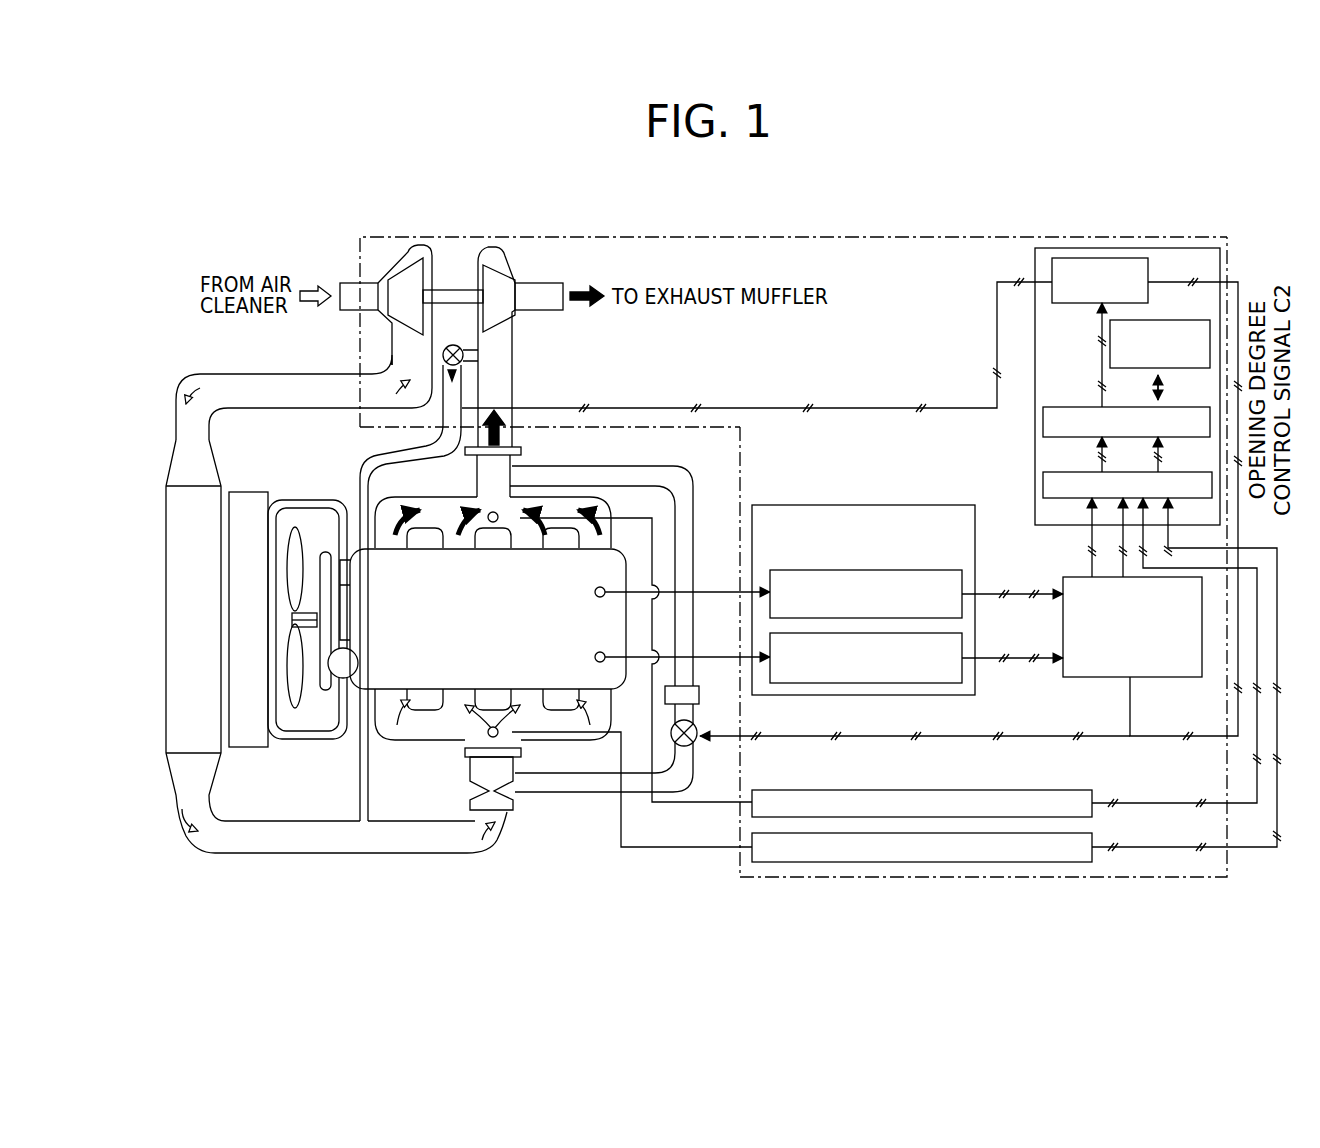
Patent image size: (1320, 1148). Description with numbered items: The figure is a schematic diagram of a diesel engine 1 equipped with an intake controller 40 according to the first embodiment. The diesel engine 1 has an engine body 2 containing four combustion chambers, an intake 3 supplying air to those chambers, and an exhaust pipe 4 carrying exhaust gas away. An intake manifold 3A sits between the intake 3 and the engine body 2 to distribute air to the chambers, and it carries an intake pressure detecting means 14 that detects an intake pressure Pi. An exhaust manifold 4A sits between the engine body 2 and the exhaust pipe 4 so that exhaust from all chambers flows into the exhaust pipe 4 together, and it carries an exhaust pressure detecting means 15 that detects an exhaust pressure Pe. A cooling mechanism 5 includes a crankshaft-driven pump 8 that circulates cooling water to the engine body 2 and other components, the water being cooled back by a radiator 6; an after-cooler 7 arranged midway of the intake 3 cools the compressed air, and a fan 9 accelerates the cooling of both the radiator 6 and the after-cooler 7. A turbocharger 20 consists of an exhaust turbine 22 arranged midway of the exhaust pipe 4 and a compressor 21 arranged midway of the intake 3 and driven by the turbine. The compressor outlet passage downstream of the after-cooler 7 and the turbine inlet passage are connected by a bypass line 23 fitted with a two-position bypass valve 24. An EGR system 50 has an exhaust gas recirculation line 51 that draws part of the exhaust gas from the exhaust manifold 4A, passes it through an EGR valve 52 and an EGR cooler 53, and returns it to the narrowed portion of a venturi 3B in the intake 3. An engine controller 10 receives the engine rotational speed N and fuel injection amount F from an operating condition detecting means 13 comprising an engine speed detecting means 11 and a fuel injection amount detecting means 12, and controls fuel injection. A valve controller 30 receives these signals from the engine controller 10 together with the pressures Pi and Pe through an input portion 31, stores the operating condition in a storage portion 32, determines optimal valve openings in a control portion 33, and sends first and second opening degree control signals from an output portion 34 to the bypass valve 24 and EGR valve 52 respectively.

The diesel engine 1 is at (975, 267).
The engine body 2 is at (618, 688).
The intake 3 is at (337, 821).
The intake manifold 3A is at (433, 742).
The venturi 3B is at (514, 803).
The exhaust pipe 4 is at (512, 437).
The exhaust manifold 4A is at (423, 502).
The cooling mechanism 5 is at (305, 460).
The radiator 6 is at (243, 747).
The after-cooler 7 is at (166, 617).
The pump 8 is at (358, 667).
The fan 9 is at (300, 550).
The engine controller 10 is at (1165, 677).
The engine speed detecting means 11 is at (962, 605).
The fuel injection amount detecting means 12 is at (975, 672).
The operating condition detecting means 13 is at (829, 604).
The intake pressure detecting means 14 is at (1092, 837).
The exhaust pressure detecting means 15 is at (1092, 790).
The turbocharger 20 is at (451, 267).
The compressor 21 is at (430, 246).
The exhaust turbine 22 is at (500, 249).
The bypass line 23 is at (447, 345).
The bypass valve 24 is at (460, 377).
The valve controller 30 is at (841, 370).
The input portion 31 is at (1043, 488).
The storage portion 32 is at (1110, 332).
The control portion 33 is at (1043, 424).
The output portion 34 is at (1107, 258).
The intake controller 40 is at (768, 237).
The EGR system 50 is at (723, 501).
The exhaust gas recirculation line 51 is at (697, 465).
The EGR valve 52 is at (700, 740).
The EGR cooler 53 is at (700, 695).